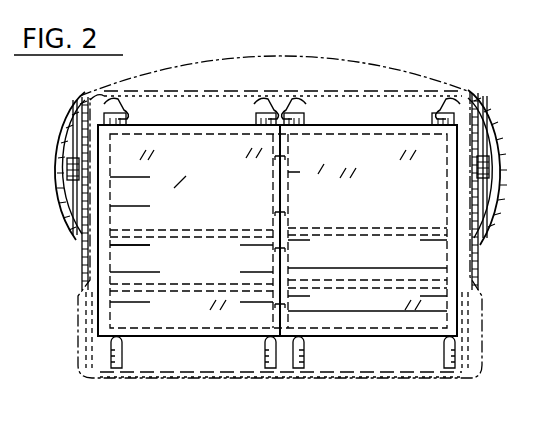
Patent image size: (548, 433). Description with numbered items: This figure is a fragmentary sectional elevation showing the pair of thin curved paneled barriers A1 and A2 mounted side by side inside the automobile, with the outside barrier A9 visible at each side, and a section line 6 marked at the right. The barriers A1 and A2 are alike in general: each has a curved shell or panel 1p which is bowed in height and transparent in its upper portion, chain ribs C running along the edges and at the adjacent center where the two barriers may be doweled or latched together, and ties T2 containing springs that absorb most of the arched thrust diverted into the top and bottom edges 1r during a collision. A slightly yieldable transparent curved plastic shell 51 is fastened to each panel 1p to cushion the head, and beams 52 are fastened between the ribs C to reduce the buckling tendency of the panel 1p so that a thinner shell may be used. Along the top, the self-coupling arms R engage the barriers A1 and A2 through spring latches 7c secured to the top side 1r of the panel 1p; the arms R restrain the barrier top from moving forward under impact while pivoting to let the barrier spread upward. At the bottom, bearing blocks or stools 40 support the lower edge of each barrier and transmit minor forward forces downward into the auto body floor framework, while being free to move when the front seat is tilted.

The self-coupling arm R is at (126, 111).
The spring latch 7c is at (127, 122).
The panel 1p is at (200, 170).
The top and bottom edges 1r is at (216, 136).
The chain rib C is at (122, 192).
The transparent curved plastic shell 51 is at (222, 176).
The tie T2 is at (122, 218).
The beam 52 is at (204, 236).
The bearing block 40 is at (122, 356).
The barrier A2 is at (219, 349).
The barrier A1 is at (393, 345).
The outside barrier A9 is at (508, 103).
The section line 6 is at (458, 61).